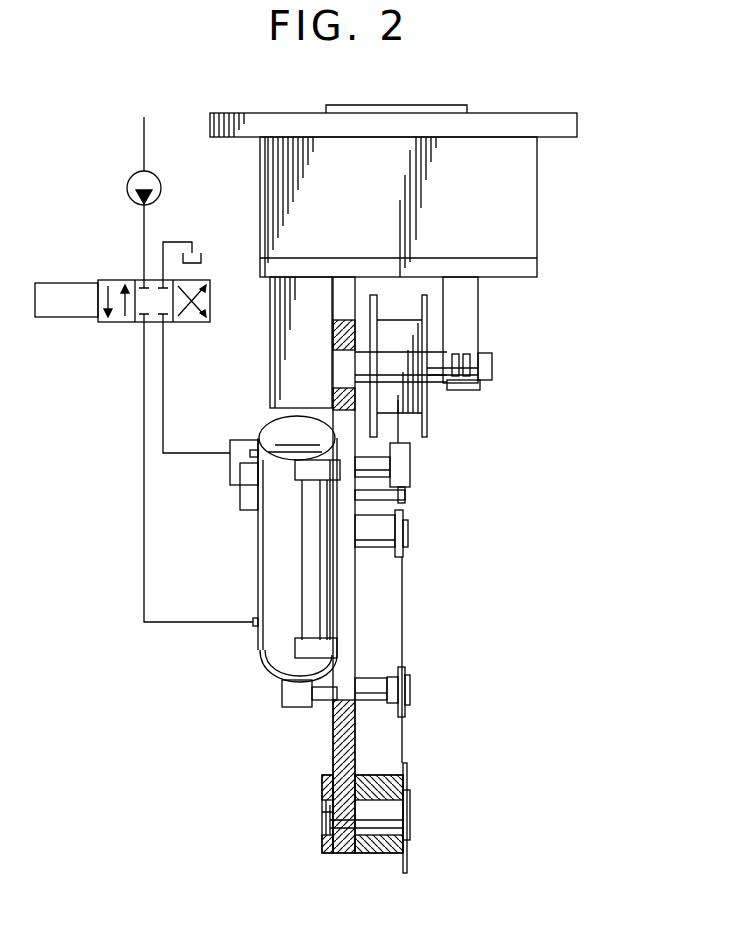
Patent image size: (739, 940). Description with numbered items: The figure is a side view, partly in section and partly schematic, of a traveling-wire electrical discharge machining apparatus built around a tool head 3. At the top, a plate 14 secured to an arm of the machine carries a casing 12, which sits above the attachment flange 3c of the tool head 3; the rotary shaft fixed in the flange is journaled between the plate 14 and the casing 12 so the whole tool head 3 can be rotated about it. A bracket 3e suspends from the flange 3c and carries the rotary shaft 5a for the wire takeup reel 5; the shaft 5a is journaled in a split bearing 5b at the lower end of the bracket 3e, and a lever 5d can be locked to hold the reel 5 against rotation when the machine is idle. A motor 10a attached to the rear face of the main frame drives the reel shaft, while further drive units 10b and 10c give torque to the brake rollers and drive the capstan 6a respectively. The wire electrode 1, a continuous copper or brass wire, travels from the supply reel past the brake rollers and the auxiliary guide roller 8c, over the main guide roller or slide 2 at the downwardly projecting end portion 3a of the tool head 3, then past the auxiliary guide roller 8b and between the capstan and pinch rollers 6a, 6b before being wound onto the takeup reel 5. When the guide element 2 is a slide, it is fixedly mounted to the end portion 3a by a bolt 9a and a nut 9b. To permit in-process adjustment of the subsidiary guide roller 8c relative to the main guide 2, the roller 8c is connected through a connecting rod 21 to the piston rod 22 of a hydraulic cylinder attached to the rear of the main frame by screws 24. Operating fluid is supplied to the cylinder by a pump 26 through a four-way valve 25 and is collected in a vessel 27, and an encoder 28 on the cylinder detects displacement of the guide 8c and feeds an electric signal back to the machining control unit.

The wire electrode 1 is at (402, 615).
The main guide roller or slide 2 is at (407, 865).
The tool head 3 is at (488, 305).
The end portion 3a is at (337, 750).
The attachment flange 3c is at (537, 270).
The bracket 3e is at (470, 333).
The wire takeup reel 5 is at (427, 395).
The rotary shaft 5a is at (492, 365).
The split bearing 5b is at (480, 384).
The lever 5d is at (464, 382).
The capstan roller 6a is at (405, 495).
The pinch roller 6b is at (410, 465).
The auxiliary guide roller 8b is at (403, 550).
The auxiliary guide roller 8c is at (405, 705).
The bolt 9a is at (396, 812).
The nut 9b is at (322, 851).
The motor 10a is at (270, 345).
The drive unit 10b is at (230, 470).
The drive unit 10c is at (240, 495).
The casing 12 is at (537, 187).
The plate 14 is at (573, 125).
The connecting rod 21 is at (376, 685).
The piston rod 22 is at (286, 706).
The screws 24 is at (253, 618).
The four-way valve 25 is at (120, 327).
The pump 26 is at (129, 183).
The vessel 27 is at (194, 255).
The encoder 28 is at (262, 655).